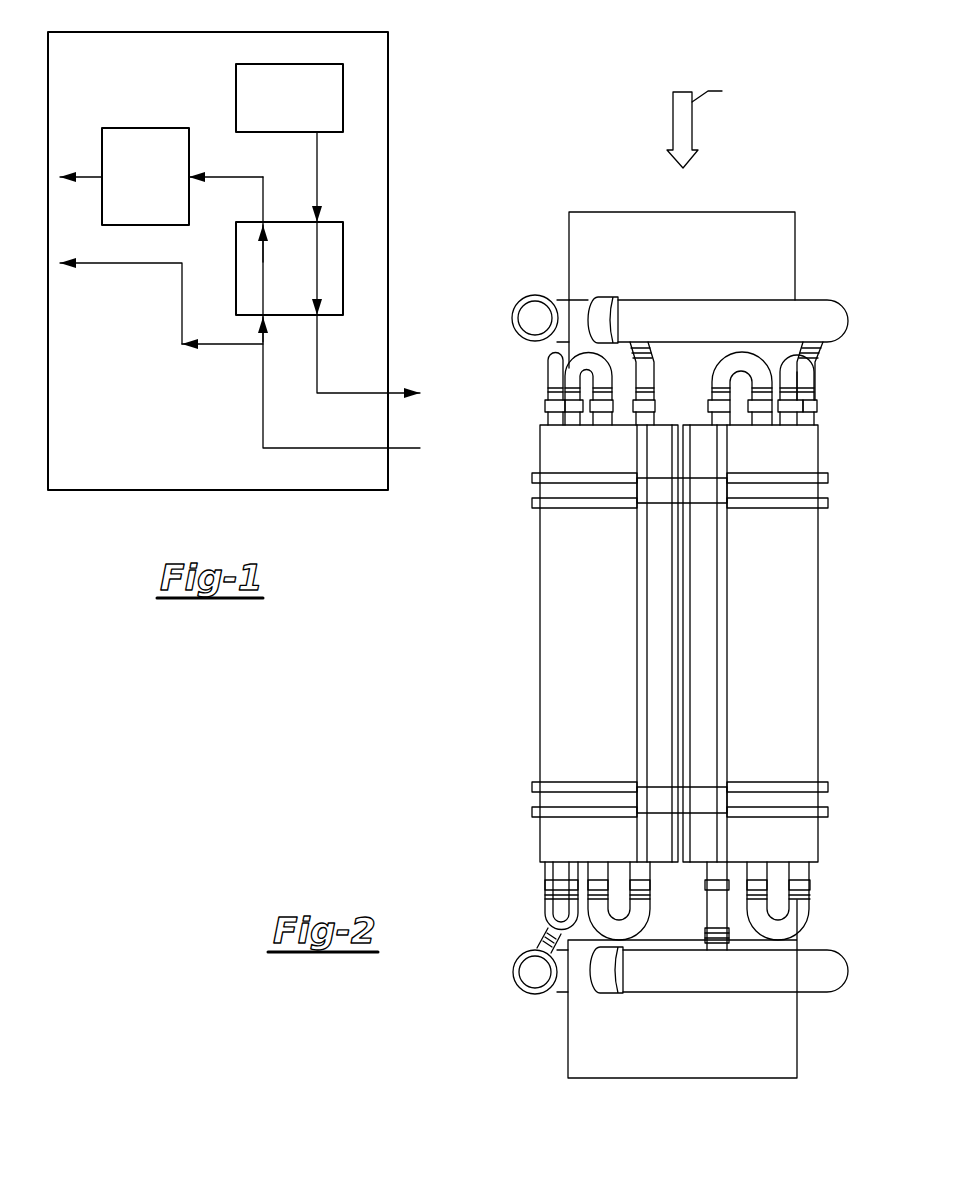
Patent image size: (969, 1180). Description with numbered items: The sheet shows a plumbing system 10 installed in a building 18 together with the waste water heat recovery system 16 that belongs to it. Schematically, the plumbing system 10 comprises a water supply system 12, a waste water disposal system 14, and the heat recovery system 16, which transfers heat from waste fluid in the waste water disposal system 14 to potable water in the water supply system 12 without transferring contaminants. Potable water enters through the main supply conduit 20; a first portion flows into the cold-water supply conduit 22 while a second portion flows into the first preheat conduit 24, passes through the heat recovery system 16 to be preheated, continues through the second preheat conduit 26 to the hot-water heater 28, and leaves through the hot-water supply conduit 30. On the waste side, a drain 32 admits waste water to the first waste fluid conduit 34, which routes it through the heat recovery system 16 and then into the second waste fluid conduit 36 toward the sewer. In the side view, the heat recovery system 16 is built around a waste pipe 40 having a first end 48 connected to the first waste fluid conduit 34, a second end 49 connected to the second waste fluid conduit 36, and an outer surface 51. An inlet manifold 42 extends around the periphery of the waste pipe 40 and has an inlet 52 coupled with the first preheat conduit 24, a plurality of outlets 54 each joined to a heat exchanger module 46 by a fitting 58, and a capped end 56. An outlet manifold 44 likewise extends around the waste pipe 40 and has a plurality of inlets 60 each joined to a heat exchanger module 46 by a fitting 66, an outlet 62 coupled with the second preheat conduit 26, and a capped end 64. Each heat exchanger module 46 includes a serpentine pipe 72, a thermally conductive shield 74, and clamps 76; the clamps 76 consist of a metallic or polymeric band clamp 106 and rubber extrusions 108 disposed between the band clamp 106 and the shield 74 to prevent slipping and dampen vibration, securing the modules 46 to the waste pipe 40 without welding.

In FIG. 1, the plumbing system 10 is at (251, 265).
In FIG. 1, the water supply system 12 is at (243, 413).
In FIG. 1, the waste water disposal system 14 is at (333, 190).
In FIG. 1, the waste water heat recovery system 16 is at (346, 270).
In FIG. 2, the waste water heat recovery system 16 is at (671, 602).
In FIG. 1, the building 18 is at (392, 60).
In FIG. 1, the main supply conduit 20 is at (330, 448).
In FIG. 1, the cold-water supply conduit 22 is at (226, 344).
In FIG. 1, the first preheat conduit 24 is at (263, 338).
In FIG. 1, the second preheat conduit 26 is at (226, 177).
In FIG. 1, the hot-water heater 28 is at (143, 128).
In FIG. 1, the hot-water supply conduit 30 is at (90, 177).
In FIG. 1, the drain 32 is at (343, 98).
In FIG. 1, the first waste fluid conduit 34 is at (318, 170).
In FIG. 1, the second waste fluid conduit 36 is at (350, 393).
In FIG. 1, the waste pipe 40 is at (318, 250).
In FIG. 2, the waste pipe 40 is at (708, 259).
In FIG. 2, the inlet manifold 42 is at (727, 997).
In FIG. 2, the outlet manifold 44 is at (732, 289).
In FIG. 2, the heat exchanger modules 46 is at (675, 643).
In FIG. 2, the first end 48 is at (783, 212).
In FIG. 2, the second end 49 is at (709, 1013).
In FIG. 2, the outer surface 51 is at (683, 1070).
In FIG. 2, the inlet 52 is at (533, 975).
In FIG. 2, the outlets 54 is at (540, 940).
In FIG. 2, the capped end 56 is at (603, 987).
In FIG. 2, the fitting 58 is at (584, 945).
In FIG. 2, the inlets 60 is at (758, 356).
In FIG. 2, the outlet 62 is at (534, 308).
In FIG. 2, the capped end 64 is at (600, 297).
In FIG. 2, the fitting 66 is at (653, 352).
In FIG. 1, the serpentine pipe 72 is at (263, 267).
In FIG. 2, the serpentine pipe 72 is at (645, 424).
In FIG. 2, the thermally conductive shield 74 is at (547, 679).
In FIG. 2, the clamps 76 is at (634, 642).
In FIG. 2, the band clamp 106 is at (547, 491).
In FIG. 2, the rubber extrusions 108 is at (533, 508).